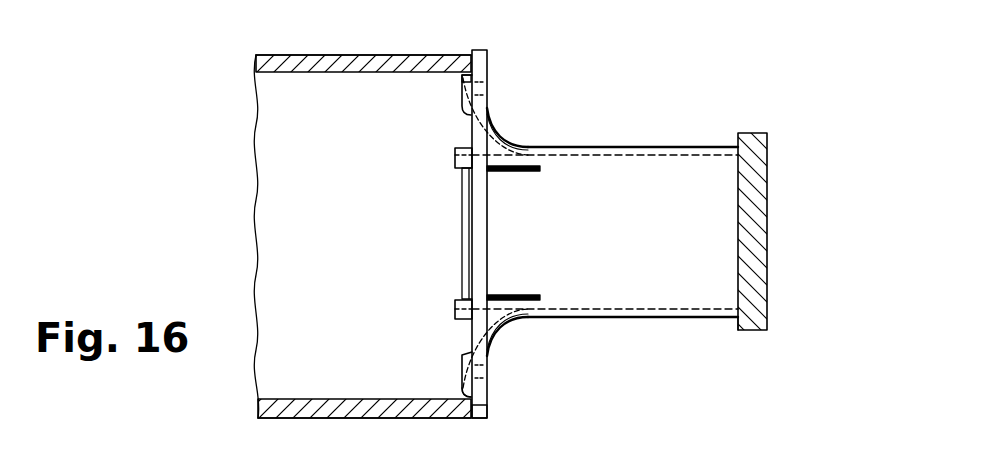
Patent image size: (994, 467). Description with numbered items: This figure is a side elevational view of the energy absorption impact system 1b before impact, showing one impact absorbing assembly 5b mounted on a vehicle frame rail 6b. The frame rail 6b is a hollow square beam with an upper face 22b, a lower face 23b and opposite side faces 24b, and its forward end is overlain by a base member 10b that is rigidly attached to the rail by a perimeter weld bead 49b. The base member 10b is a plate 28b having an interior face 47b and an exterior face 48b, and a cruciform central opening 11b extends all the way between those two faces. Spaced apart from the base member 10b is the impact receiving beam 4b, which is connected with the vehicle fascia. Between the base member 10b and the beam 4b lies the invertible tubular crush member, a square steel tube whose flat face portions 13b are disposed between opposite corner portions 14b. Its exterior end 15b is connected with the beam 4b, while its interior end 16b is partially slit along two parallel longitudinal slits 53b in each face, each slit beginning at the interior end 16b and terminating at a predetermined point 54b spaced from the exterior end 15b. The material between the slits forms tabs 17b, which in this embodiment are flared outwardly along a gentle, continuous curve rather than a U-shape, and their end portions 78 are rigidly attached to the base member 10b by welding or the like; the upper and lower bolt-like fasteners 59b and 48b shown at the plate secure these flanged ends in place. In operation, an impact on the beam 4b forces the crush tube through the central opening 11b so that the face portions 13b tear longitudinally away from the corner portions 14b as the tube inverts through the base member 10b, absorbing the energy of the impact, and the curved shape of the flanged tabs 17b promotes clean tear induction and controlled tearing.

The energy absorption impact system 1b is at (233, 112).
The beam 4b is at (765, 215).
The impact absorbing assembly 5b is at (252, 385).
The vehicle frame rail 6b is at (258, 55).
The base member 10b is at (490, 364).
The central opening 11b is at (490, 78).
The face portion 13b is at (645, 245).
The corner portion 14b is at (672, 147).
The exterior end 15b is at (741, 329).
The interior end 16b is at (462, 298).
The tab 17b is at (505, 140).
The upper face 22b is at (387, 57).
The lower face 23b is at (366, 420).
The side face 24b is at (272, 210).
The mounting plate 28b is at (479, 50).
The interior face 47b is at (492, 405).
The exterior face 48b is at (472, 334).
The perimeter weld bead 49b is at (459, 79).
The longitudinal slit 53b is at (508, 171).
The predetermined point 54b is at (540, 297).
The upper bolt 59b is at (460, 157).
The end portion 78 is at (462, 364).